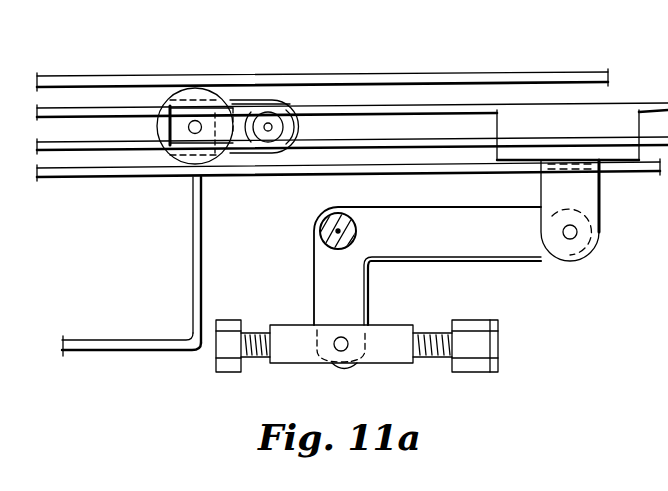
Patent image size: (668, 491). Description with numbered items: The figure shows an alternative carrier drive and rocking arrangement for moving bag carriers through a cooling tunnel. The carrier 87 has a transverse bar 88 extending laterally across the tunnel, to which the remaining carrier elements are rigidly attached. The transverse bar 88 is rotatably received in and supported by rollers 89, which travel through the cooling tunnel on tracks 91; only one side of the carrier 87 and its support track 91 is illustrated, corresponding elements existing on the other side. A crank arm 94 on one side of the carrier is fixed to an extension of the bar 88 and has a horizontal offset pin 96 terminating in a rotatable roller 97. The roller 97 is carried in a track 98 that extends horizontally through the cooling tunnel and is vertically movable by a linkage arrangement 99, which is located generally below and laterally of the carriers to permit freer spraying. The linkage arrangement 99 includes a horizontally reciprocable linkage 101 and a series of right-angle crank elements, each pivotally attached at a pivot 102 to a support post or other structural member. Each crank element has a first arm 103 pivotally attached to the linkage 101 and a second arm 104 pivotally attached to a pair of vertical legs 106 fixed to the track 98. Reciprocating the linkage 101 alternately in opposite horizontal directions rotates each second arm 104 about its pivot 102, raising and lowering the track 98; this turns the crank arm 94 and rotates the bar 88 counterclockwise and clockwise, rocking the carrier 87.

The carrier 87 is at (98, 333).
The transverse bar 88 is at (170, 168).
The rollers 89 is at (208, 88).
The tracks 91 is at (89, 178).
The crank arm 94 is at (272, 102).
The horizontal offset pin 96 is at (281, 126).
The roller 97 is at (278, 102).
The track 98 is at (401, 103).
The linkage arrangement 99 is at (259, 393).
The horizontally reciprocable linkage 101 is at (387, 367).
The pivot 102 is at (360, 231).
The first arm 103 is at (330, 295).
The second arm 104 is at (488, 244).
The vertical legs 106 is at (600, 197).